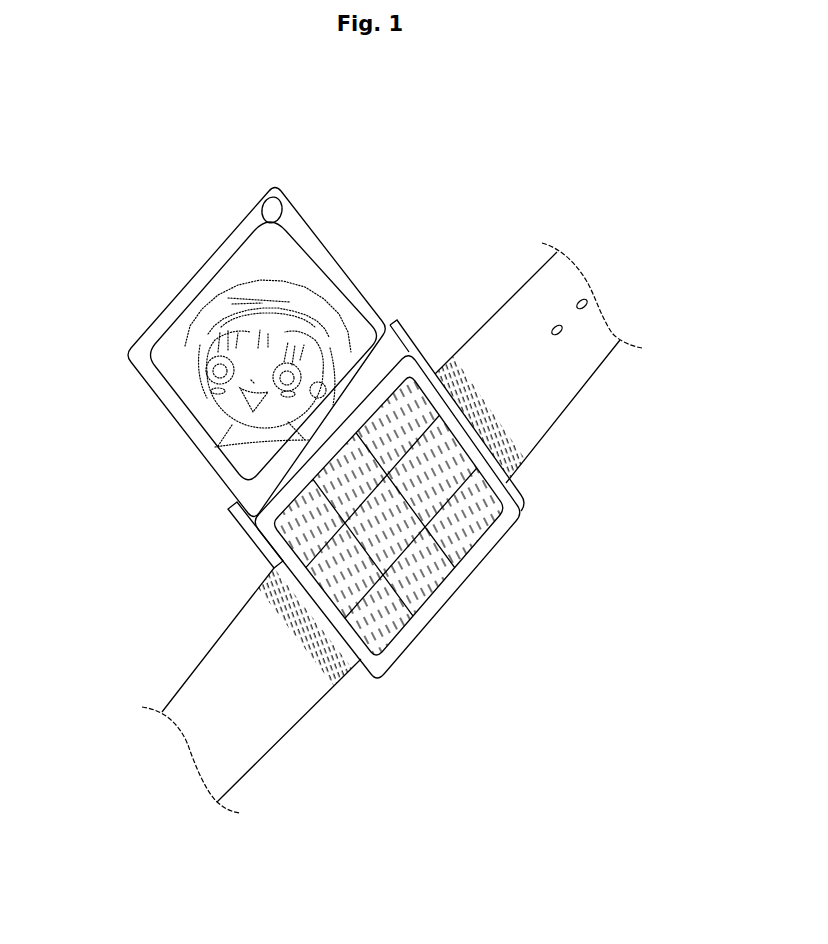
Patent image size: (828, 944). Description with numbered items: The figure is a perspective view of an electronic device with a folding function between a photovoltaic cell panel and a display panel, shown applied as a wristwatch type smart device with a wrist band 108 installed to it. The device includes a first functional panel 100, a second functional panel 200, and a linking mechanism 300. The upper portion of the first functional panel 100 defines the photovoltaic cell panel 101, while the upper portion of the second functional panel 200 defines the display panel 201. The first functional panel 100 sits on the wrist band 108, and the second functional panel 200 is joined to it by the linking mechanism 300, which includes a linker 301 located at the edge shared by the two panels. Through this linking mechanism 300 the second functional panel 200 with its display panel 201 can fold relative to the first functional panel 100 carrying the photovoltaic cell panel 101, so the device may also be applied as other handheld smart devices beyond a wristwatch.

The first functional panel 100 is at (472, 604).
The photovoltaic cell panel 101 is at (414, 640).
The wrist band 108 is at (260, 760).
The second functional panel 200 is at (217, 352).
The display panel 201 is at (182, 390).
The linking mechanism 300 is at (294, 396).
The linker 301 is at (413, 338).